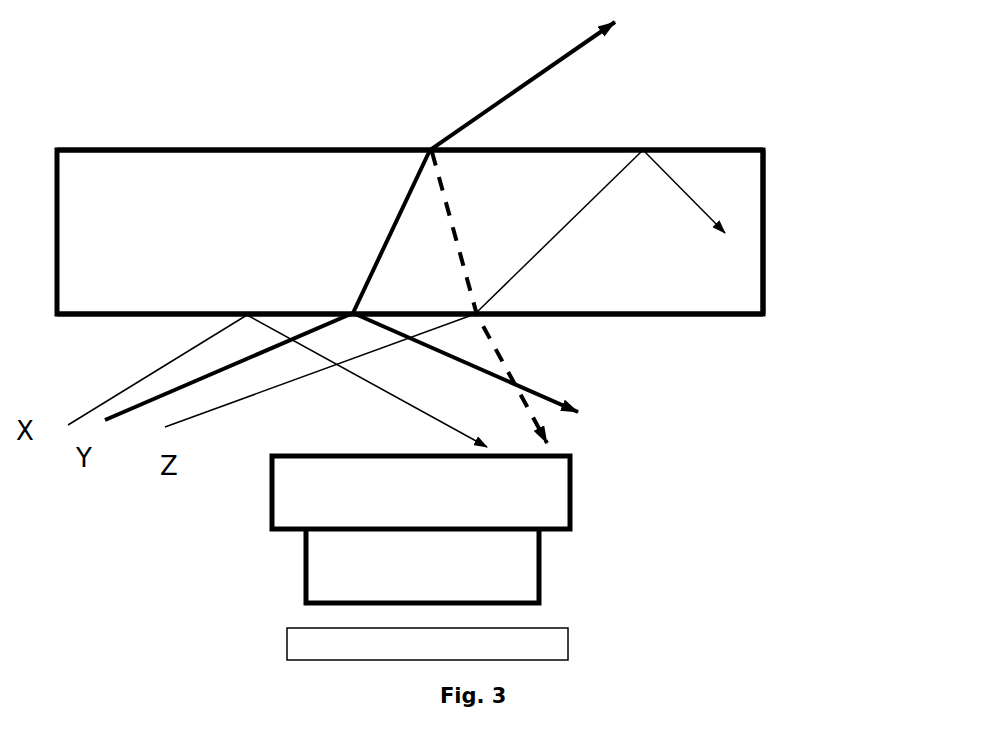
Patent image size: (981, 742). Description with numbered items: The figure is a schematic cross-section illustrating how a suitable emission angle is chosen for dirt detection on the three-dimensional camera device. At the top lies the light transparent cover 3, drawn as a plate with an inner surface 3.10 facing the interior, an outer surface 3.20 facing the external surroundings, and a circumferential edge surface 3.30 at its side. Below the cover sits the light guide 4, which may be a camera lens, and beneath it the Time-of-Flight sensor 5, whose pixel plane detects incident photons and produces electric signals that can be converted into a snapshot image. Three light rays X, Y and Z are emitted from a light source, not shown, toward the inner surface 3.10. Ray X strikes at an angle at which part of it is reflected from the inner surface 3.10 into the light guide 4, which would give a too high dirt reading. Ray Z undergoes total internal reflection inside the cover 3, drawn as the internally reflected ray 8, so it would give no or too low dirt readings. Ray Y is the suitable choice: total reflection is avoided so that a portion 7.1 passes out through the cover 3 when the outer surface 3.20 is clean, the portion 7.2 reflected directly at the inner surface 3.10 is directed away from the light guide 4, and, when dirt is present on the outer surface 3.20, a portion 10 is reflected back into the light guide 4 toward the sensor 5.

The transparent cover 3 is at (160, 190).
The inner surface 3.10 is at (722, 320).
The outer surface 3.20 is at (708, 138).
The circumferential edge surface 3.30 is at (768, 231).
The light guide 4 is at (590, 487).
The Time-of-Flight sensor 5 is at (557, 618).
The portion of the light ray 7.1 is at (360, 221).
The portion of the light ray 7.2 is at (465, 362).
The internally reflected beam 8 is at (684, 191).
The portion of the light ray 10 is at (489, 297).